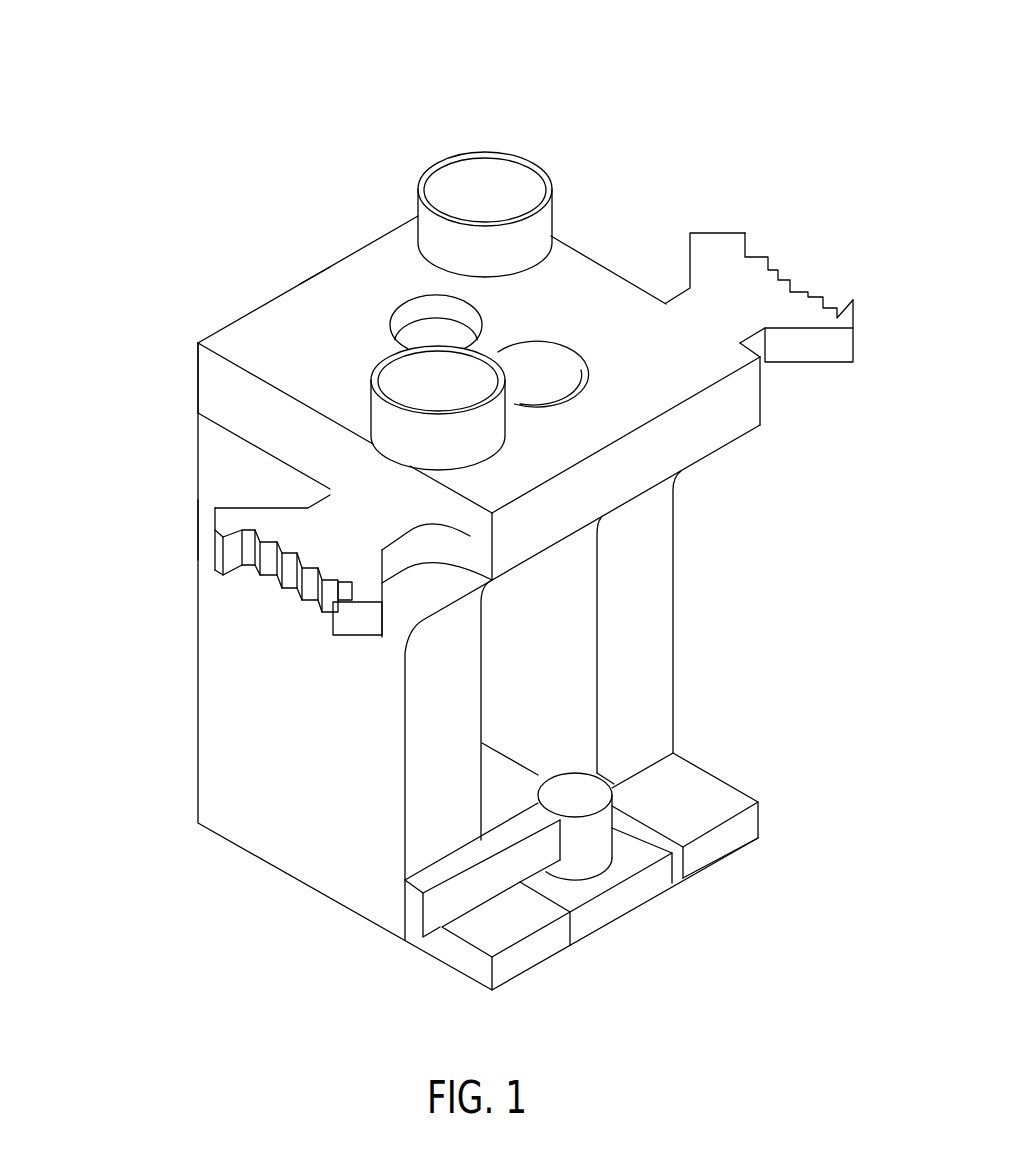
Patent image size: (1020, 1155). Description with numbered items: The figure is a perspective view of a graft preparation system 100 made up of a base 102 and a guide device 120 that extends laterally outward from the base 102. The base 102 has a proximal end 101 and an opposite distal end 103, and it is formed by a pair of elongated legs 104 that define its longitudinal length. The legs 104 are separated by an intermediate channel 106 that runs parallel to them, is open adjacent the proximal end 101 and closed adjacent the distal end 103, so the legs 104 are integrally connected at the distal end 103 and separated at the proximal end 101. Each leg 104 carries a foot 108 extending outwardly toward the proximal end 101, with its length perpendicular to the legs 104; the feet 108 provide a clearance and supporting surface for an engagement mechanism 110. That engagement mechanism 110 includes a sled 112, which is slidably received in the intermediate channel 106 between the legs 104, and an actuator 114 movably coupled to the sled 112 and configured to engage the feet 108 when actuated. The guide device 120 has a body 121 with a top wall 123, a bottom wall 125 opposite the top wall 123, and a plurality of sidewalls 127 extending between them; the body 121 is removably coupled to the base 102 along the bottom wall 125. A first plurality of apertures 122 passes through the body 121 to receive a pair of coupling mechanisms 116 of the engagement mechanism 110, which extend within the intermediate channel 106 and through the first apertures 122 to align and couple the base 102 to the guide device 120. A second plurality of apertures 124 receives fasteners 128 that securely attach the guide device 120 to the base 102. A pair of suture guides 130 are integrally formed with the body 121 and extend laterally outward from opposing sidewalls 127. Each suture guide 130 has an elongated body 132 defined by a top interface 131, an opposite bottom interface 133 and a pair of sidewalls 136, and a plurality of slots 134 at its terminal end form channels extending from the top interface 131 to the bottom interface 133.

The graft preparation system 100 is at (263, 100).
The proximal end 101 is at (800, 893).
The base 102 is at (165, 668).
The distal end 103 is at (130, 513).
The elongated legs 104 is at (663, 630).
The intermediate channel 106 is at (540, 712).
The foot 108 is at (722, 795).
The engagement mechanism 110 is at (665, 915).
The sled 112 is at (635, 843).
The actuator 114 is at (413, 920).
The coupling mechanisms 116 is at (413, 336).
The guide device 120 is at (225, 298).
The body 121 is at (672, 388).
The first plurality of apertures 122 is at (408, 300).
The top wall 123 is at (322, 283).
The second plurality of apertures 124 is at (360, 368).
The bottom wall 125 is at (730, 448).
The sidewalls 127 is at (202, 372).
The fasteners 128 is at (503, 153).
The suture guides 130 is at (830, 185).
The top interface 131 is at (715, 237).
The elongated body 132 is at (727, 330).
The bottom interface 133 is at (849, 370).
The slots 134 is at (752, 255).
The sidewalls 136 is at (688, 246).